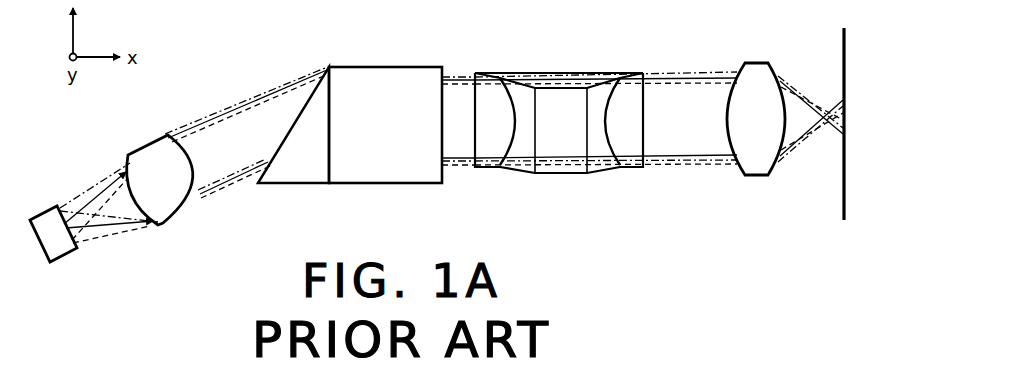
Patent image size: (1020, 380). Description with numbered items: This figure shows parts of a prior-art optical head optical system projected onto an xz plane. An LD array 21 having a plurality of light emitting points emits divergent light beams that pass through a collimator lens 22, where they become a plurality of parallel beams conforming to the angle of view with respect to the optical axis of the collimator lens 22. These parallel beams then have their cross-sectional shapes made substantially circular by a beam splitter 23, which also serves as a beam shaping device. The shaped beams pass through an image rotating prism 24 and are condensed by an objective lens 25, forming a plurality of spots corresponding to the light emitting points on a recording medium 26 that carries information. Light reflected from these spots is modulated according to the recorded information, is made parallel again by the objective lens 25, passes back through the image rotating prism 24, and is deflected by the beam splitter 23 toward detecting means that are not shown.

The LD array 21 is at (45, 204).
The collimator lens 22 is at (130, 153).
The beam splitter 23 is at (390, 65).
The image rotating prism 24 is at (570, 73).
The objective lens 25 is at (763, 62).
The recording medium 26 is at (840, 188).